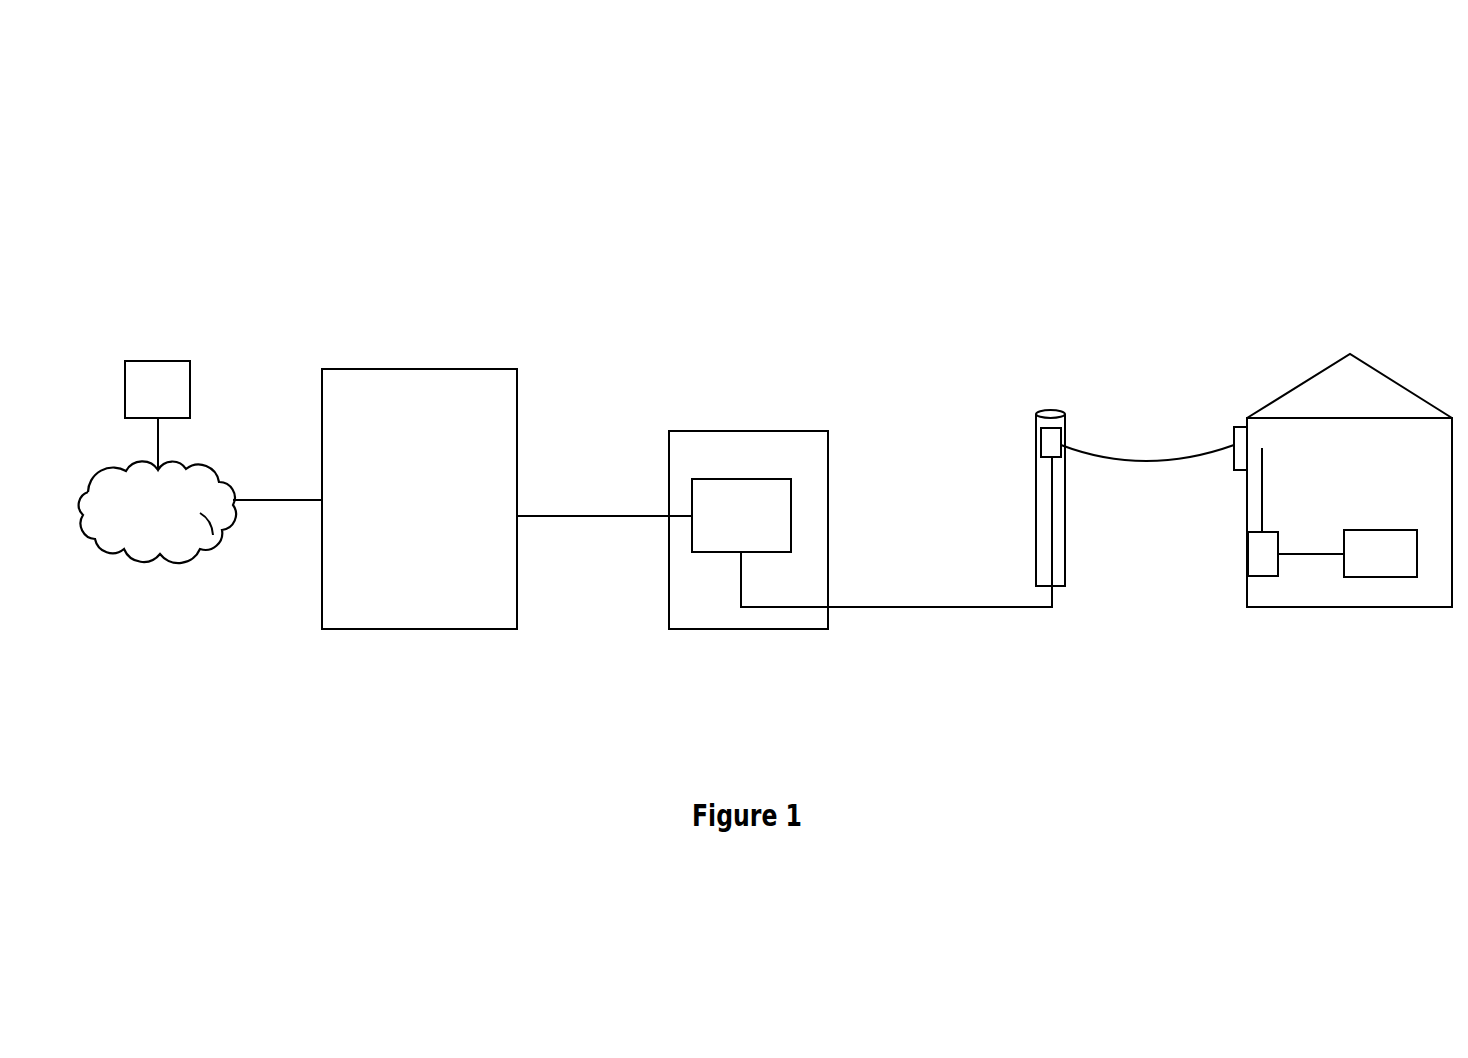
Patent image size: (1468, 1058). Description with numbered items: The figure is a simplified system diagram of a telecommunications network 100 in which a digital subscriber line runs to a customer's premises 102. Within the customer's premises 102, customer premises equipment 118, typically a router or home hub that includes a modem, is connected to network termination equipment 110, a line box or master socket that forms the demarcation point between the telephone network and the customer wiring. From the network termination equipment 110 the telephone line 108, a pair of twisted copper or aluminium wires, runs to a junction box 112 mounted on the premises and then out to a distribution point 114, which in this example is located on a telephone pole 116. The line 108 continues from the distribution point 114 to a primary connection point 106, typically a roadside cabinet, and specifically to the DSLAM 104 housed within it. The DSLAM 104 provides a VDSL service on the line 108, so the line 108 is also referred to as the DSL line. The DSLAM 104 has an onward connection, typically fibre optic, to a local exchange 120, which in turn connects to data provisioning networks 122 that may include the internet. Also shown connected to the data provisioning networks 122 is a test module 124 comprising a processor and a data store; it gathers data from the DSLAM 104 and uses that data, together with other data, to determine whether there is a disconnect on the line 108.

The telecommunications network 100 is at (765, 352).
The customer's premises 102 is at (1327, 363).
The DSLAM 104 is at (729, 475).
The primary connection point (PCP) 106 is at (748, 509).
The telephone line 108 is at (943, 598).
The network termination equipment (NTE) 110 is at (1242, 548).
The junction box 112 is at (1235, 427).
The distribution point (DP) 114 is at (1042, 449).
The telephone pole 116 is at (1032, 514).
The customer premises equipment (CPE) 118 is at (1363, 525).
The local exchange 120 is at (528, 609).
The data provisioning networks 122 is at (205, 458).
The test module 124 is at (165, 356).